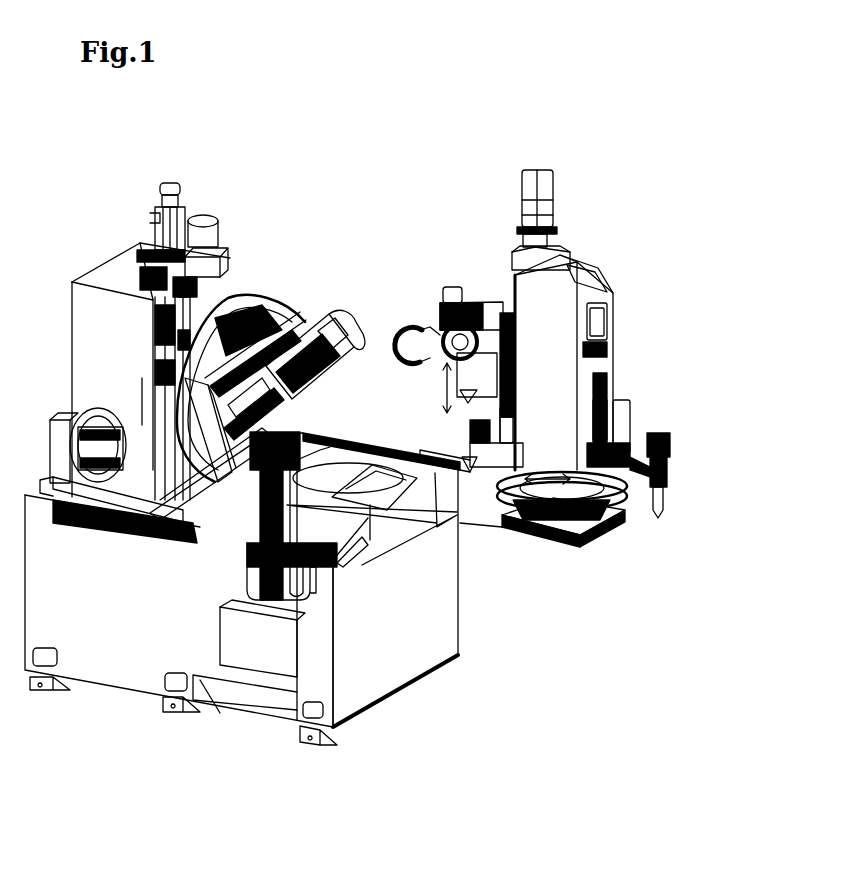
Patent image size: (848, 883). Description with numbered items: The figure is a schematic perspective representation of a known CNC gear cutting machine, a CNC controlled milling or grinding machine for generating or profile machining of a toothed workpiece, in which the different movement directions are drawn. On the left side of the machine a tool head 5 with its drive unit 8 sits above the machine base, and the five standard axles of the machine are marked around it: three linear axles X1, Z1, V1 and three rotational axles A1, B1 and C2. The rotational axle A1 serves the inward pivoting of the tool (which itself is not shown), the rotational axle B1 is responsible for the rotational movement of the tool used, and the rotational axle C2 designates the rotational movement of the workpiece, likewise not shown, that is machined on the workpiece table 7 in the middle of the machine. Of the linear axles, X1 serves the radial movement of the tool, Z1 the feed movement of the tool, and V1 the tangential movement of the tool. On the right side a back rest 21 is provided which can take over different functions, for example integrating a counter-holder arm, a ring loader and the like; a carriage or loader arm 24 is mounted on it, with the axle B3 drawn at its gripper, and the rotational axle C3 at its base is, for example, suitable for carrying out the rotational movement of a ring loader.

The grinding head / tool unit 5 is at (275, 345).
The drive motor of the grinding head 8 is at (333, 320).
The workpiece table 7 is at (220, 533).
The loading unit / second machine column 21 is at (534, 373).
The carriage with gripper 24 is at (456, 352).
The rotational axle A1 is at (247, 310).
The linear axle V1 is at (277, 297).
The rotational axle B1 is at (285, 406).
The pivot axis B3 (gripper) B3 is at (404, 341).
The rotational axle C2 is at (303, 453).
The rotational axle C3 is at (543, 480).
The linear axle Z1 is at (142, 428).
The linear axle X1 is at (130, 491).